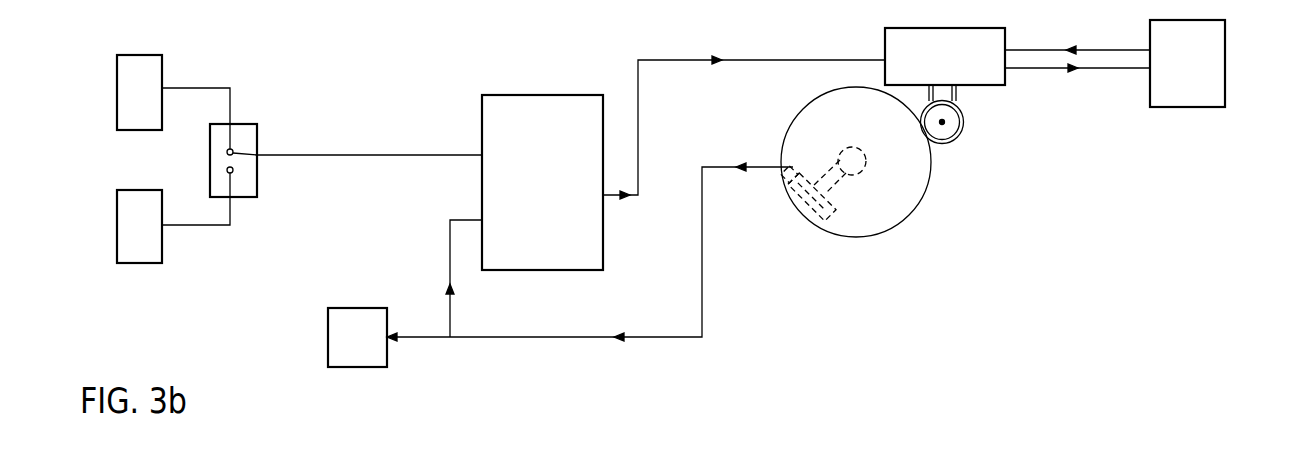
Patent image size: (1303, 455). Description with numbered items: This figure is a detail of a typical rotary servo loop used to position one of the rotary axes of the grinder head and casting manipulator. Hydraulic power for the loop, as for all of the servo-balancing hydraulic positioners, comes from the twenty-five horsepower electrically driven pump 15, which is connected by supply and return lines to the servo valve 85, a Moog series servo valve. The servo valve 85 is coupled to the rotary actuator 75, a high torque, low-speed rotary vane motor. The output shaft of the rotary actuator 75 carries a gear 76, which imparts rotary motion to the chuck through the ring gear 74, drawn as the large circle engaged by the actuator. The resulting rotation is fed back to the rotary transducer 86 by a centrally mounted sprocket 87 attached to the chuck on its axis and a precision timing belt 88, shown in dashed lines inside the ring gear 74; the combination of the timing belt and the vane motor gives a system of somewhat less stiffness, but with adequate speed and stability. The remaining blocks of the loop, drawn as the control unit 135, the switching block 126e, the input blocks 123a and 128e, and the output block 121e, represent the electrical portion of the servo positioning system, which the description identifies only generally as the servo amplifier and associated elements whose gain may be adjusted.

The pump 15 is at (1222, 45).
The ring gear 74 is at (930, 186).
The rotary actuator 75 is at (964, 118).
The gear 76 is at (944, 124).
The servo valve 85 is at (950, 32).
The rotary transducer 86 is at (812, 204).
The sprocket 87 is at (856, 172).
The timing belt 88 is at (847, 178).
The drive unit 121e is at (345, 308).
The input unit 123a is at (122, 97).
The switch 126e is at (245, 128).
The input unit 128e is at (122, 240).
The control unit 135 is at (495, 95).